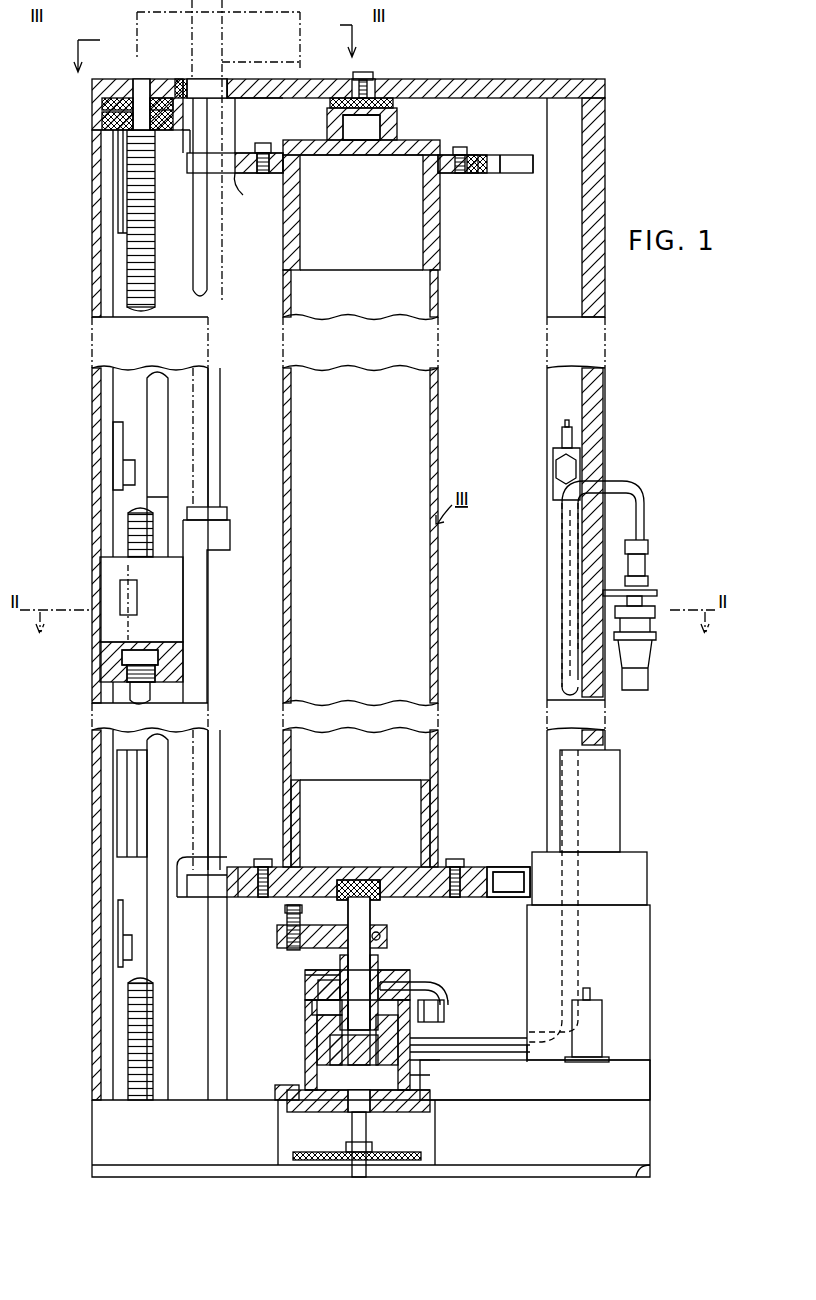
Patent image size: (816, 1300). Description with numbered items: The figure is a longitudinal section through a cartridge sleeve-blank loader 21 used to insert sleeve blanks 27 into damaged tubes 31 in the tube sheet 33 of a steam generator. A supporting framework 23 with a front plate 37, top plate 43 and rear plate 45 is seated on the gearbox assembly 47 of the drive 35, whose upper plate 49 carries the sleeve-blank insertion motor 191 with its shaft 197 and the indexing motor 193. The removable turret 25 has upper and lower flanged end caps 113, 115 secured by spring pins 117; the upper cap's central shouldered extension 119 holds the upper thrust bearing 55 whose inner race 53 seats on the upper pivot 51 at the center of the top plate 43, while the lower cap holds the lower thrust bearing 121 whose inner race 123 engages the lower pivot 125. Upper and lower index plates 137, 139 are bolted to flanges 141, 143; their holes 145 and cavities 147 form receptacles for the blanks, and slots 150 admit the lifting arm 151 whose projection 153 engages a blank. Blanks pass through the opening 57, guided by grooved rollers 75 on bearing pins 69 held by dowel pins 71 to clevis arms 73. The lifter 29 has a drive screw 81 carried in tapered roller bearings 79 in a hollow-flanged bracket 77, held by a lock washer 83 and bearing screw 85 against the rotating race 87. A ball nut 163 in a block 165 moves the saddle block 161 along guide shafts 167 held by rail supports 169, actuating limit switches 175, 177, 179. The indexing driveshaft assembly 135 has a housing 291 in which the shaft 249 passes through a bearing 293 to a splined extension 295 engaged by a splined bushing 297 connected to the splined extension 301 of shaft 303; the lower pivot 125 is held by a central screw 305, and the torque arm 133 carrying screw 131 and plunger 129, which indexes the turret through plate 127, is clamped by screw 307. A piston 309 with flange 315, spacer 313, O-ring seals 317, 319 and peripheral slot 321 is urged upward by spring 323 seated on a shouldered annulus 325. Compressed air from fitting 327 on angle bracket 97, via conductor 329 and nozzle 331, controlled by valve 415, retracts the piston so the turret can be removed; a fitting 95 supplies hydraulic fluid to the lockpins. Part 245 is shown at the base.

The cartridge sleeve-blank loader 21 is at (622, 545).
The supporting framework 23 is at (608, 92).
The turret 25 is at (444, 742).
The sleeve blank 27 is at (224, 46).
The lifter 29 is at (230, 412).
The tube 31 is at (192, 21).
The tube sheet 33 is at (286, 22).
The drive 35 is at (551, 1087).
The front plate 37 is at (102, 748).
The top plate 43 is at (452, 79).
The rear plate 45 is at (600, 408).
The gearbox assembly 47 is at (120, 1138).
The upper plate of the gearbox 49 is at (222, 1098).
The upper pivot 51 is at (366, 78).
The inner race 53 is at (349, 128).
The upper thrust bearing 55 is at (336, 96).
The opening 57 is at (200, 75).
The bearing pin 69 is at (192, 79).
The dowel pin 71 is at (240, 98).
The clevis arm 73 is at (182, 130).
The grooved roller 75 is at (240, 130).
The hollow-flanged bracket 77 is at (162, 70).
The tapered roller bearing 79 is at (92, 127).
The drive screw 81 is at (144, 210).
The lock washer 83 is at (92, 88).
The bearing screw 85 is at (156, 80).
The rotating race 87 is at (90, 114).
The fitting 95 is at (654, 664).
The angle bracket 97 is at (656, 590).
The upper flanged end cap 113 is at (444, 146).
The lower flanged end cap 115 is at (434, 800).
The spring pin 117 is at (438, 261).
The central shouldered extension 119 is at (394, 118).
The lower thrust bearing 121 is at (378, 861).
The inner race of lower thrust bearing 123 is at (380, 880).
The lower pivot 125 is at (370, 912).
The plate 127 is at (461, 868).
The spring-activated plunger 129 is at (267, 868).
The screw 131 is at (286, 920).
The torque arm 133 is at (338, 925).
The indexing driveshaft assembly 135 is at (386, 966).
The upper index plate 137 is at (478, 154).
The lower index plate 139 is at (246, 854).
The flange of upper end cap 141 is at (460, 173).
The flange of lower end cap 143 is at (476, 898).
The hole 145 is at (236, 173).
The cavity 147 is at (178, 897).
The slot 150 is at (504, 173).
The lifting arm 151 is at (226, 536).
The projection 153 is at (222, 507).
The saddle block 161 is at (106, 524).
The ball nut 163 is at (122, 658).
The block 165 is at (102, 574).
The guide shaft 167 is at (160, 964).
The rail support 169 is at (128, 790).
The limit switch 175 is at (126, 925).
The limit switch 177 is at (112, 438).
The limit switch 179 is at (116, 190).
The sleeve-blank insertion motor 191 is at (622, 852).
The indexing motor 193 is at (604, 1022).
The motor shaft 197 is at (612, 786).
The chamfer 245 is at (650, 1172).
The shaft 249 is at (366, 1130).
The flanged housing 291 is at (430, 1090).
The bearing 293 is at (346, 1120).
The splined extension 295 is at (330, 1069).
The splined bushing 297 is at (318, 1043).
The splined extension of shaft 301 is at (408, 1052).
The shaft 303 is at (340, 972).
The central screw 305 is at (336, 876).
The screw 307 is at (384, 936).
The piston 309 is at (396, 974).
The spacer 313 is at (426, 1020).
The piston flange 315 is at (305, 1024).
The O-ring seal 317 is at (302, 975).
The O-ring seal 319 is at (312, 1007).
The peripheral slot 321 is at (318, 988).
The spring 323 is at (404, 1068).
The shouldered annulus 325 is at (278, 1106).
The fitting 327 is at (648, 550).
The conductor 329 is at (502, 1058).
The nozzle 331 is at (432, 990).
The valve 415 is at (561, 432).